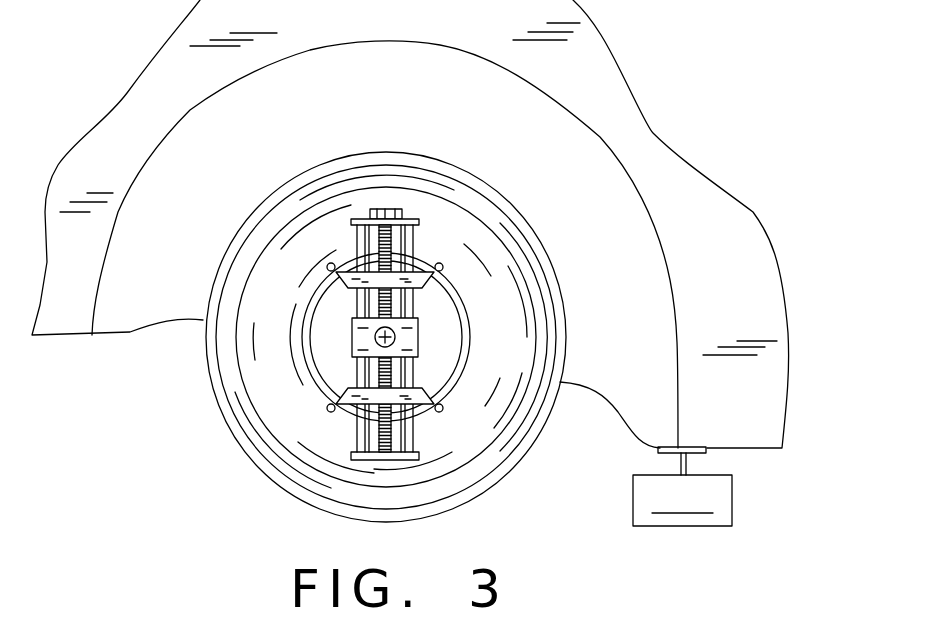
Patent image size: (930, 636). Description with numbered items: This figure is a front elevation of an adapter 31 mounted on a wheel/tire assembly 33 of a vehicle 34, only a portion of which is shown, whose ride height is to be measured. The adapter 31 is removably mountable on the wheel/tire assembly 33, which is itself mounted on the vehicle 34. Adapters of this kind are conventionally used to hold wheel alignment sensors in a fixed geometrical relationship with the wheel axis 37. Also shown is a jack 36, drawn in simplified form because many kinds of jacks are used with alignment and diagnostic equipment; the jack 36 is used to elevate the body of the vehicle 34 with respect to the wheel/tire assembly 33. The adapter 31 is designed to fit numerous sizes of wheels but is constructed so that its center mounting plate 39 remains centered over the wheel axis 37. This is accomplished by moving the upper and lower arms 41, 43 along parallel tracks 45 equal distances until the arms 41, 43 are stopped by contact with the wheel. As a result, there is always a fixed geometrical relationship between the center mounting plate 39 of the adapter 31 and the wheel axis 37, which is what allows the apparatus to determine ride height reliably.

The adapter 31 is at (338, 317).
The wheel/tire assembly 33 is at (497, 476).
The vehicle 34 is at (392, 27).
The jack 36 is at (733, 492).
The wheel axis 37 is at (395, 337).
The center mounting plate 39 is at (418, 319).
The upper arm 41 is at (441, 264).
The lower arm 43 is at (437, 380).
The parallel tracks 45 is at (348, 368).